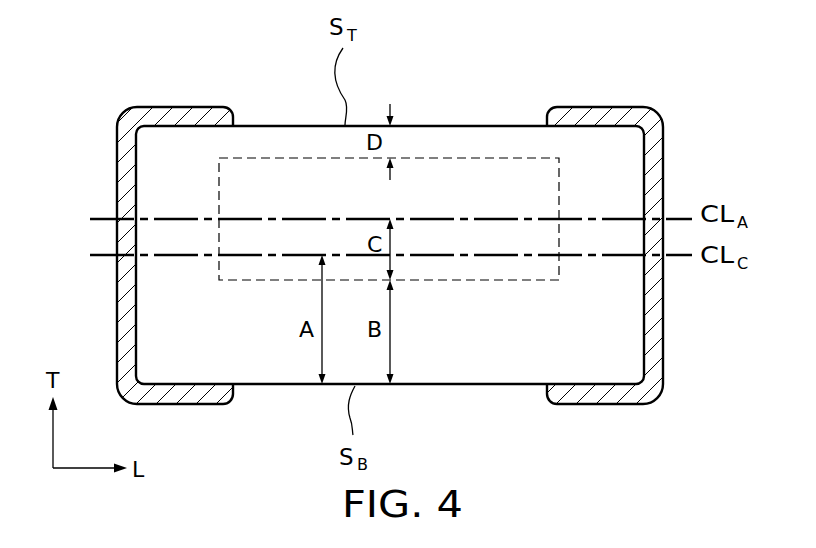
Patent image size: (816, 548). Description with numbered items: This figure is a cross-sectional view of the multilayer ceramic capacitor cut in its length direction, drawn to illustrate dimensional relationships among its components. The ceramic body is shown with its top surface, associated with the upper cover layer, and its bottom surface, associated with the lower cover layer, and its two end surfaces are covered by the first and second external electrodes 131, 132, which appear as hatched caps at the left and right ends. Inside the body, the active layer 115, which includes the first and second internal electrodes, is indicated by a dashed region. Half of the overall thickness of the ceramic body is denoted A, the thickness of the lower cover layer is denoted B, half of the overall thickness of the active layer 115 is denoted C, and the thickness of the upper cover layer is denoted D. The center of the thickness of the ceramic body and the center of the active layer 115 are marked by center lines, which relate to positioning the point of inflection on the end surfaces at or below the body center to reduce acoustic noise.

The first external electrode 131 is at (180, 115).
The second external electrode 132 is at (603, 115).
The active layer 115 is at (569, 172).